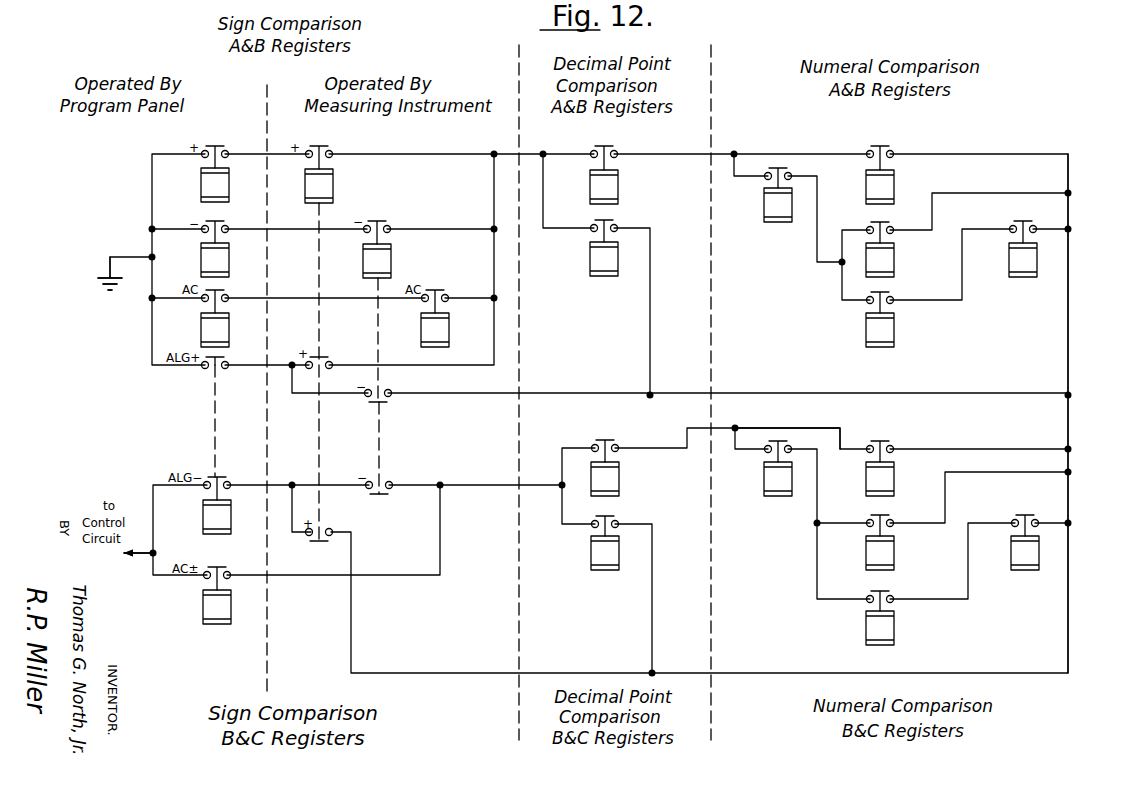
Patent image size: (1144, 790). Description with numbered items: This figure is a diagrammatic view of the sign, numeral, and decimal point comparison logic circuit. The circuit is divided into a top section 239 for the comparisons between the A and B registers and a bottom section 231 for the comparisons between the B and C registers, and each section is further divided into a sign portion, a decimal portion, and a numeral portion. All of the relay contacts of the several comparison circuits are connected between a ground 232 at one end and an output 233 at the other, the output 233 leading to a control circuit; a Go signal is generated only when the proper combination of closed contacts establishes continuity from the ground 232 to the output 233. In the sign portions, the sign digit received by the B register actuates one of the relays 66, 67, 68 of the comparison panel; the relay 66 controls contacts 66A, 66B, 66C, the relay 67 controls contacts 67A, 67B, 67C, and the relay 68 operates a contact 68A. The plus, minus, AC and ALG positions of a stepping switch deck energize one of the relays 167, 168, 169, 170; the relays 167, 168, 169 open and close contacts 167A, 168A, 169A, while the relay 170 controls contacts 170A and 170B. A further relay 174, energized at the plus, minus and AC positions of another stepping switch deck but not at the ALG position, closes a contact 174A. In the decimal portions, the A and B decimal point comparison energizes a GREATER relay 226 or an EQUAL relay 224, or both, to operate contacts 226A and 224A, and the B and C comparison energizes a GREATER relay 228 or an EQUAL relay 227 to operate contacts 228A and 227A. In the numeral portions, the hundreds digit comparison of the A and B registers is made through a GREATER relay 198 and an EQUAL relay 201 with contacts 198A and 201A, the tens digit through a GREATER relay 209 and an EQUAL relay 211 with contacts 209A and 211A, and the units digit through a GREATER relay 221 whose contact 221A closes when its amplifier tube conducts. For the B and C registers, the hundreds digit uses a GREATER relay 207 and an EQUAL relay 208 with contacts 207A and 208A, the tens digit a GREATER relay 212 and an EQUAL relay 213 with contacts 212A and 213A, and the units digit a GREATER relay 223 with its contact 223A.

The sign relay 66 is at (333, 186).
The relay contact 66A is at (322, 145).
The relay contact 66B is at (321, 356).
The relay contact 66C is at (316, 542).
The sign relay 67 is at (391, 258).
The relay contact 67A is at (380, 220).
The relay contact 67B is at (380, 403).
The relay contact 67C is at (381, 495).
The sign relay 68 is at (449, 328).
The relay contact 68A is at (438, 289).
The relay 167 is at (200, 186).
The relay contact 167A is at (221, 142).
The relay 168 is at (201, 258).
The relay contact 168A is at (206, 220).
The relay 169 is at (200, 327).
The relay contact 169A is at (218, 289).
The relay 170 is at (203, 516).
The relay contact 170A is at (218, 366).
The relay contact 170B is at (219, 477).
The relay 174 is at (203, 608).
The relay contact 174A is at (215, 566).
The GREATER relay 198 is at (894, 186).
The relay contact 198A is at (884, 145).
The EQUAL relay 201 is at (764, 209).
The relay contact 201A is at (782, 168).
The GREATER relay 207 is at (894, 478).
The relay contact 207A is at (884, 440).
The EQUAL relay 208 is at (764, 484).
The relay contact 208A is at (782, 441).
The GREATER relay 209 is at (894, 258).
The relay contact 209A is at (872, 224).
The EQUAL relay 211 is at (894, 329).
The relay contact 211A is at (884, 292).
The GREATER relay 212 is at (894, 552).
The relay contact 212A is at (884, 514).
The EQUAL relay 213 is at (894, 630).
The relay contact 213A is at (884, 590).
The GREATER relay 221 is at (1009, 265).
The relay contact 221A is at (1030, 220).
The GREATER relay 223 is at (1011, 560).
The relay contact 223A is at (1033, 515).
The EQUAL relay 224 is at (618, 186).
The relay contact 224A is at (608, 145).
The GREATER relay 226 is at (590, 262).
The relay contact 226A is at (608, 220).
The EQUAL relay 227 is at (619, 478).
The relay contact 227A is at (608, 440).
The GREATER relay 228 is at (591, 558).
The relay contact 228A is at (609, 516).
The bottom section 231 is at (1070, 504).
The ground 232 is at (132, 252).
The output 233 is at (147, 556).
The top section 239 is at (1070, 303).